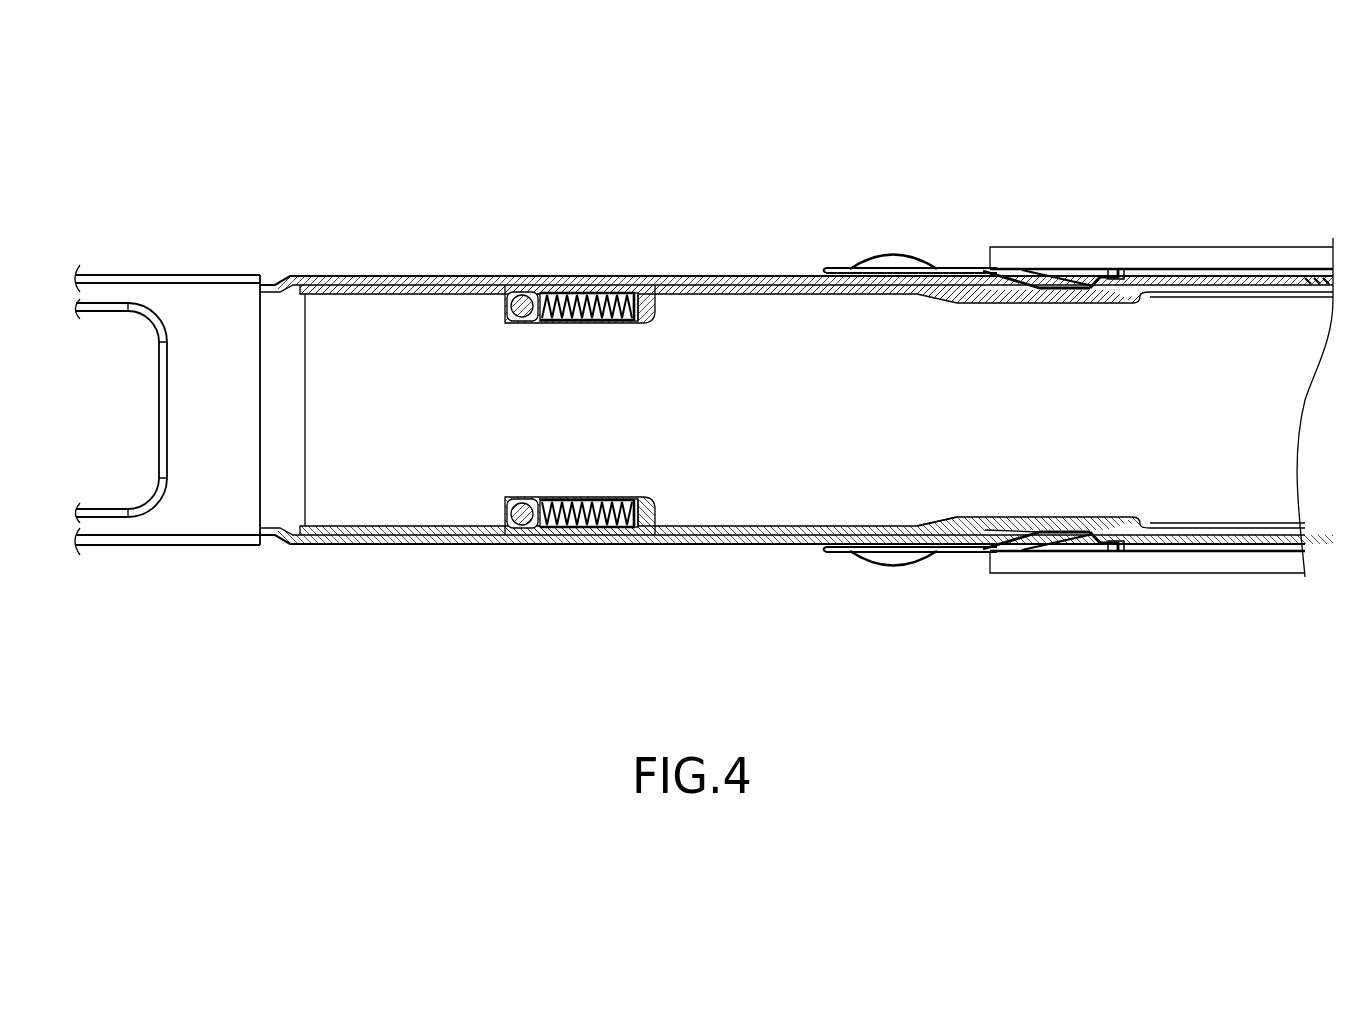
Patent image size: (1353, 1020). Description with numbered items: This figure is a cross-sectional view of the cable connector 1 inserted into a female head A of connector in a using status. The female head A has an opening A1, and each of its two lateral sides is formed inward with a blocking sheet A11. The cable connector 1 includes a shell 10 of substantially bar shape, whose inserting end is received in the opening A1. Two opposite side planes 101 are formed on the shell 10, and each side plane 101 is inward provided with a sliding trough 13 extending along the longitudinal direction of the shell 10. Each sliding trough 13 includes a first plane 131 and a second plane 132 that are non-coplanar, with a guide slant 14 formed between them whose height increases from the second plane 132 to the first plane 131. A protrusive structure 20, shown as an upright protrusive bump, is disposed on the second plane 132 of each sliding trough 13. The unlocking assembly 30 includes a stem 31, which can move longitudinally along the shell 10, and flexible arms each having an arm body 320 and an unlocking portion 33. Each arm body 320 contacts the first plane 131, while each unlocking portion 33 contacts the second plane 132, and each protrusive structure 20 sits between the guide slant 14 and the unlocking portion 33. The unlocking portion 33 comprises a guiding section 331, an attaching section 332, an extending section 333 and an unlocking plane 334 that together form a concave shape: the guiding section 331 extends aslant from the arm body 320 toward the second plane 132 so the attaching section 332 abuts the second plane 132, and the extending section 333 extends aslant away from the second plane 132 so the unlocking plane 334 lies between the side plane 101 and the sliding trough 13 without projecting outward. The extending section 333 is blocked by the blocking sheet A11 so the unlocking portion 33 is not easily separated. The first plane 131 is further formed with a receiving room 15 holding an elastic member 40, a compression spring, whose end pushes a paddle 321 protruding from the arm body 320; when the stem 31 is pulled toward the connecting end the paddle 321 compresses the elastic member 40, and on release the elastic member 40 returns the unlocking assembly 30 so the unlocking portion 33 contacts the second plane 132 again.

The cable connector 1 is at (345, 200).
The unlocking assembly 30 is at (135, 270).
The stem 31 is at (210, 290).
The shell 10 is at (476, 290).
The arm body 320 is at (427, 280).
The paddle 321 is at (638, 300).
The receiving room 15 is at (580, 292).
The elastic member 40 is at (605, 295).
The opening A1 is at (820, 270).
The sliding trough 13 is at (967, 555).
The first plane 131 is at (800, 540).
The guide slant 14 is at (946, 528).
The protrusive structure 20 is at (1000, 532).
The second plane 132 is at (1030, 530).
The blocking sheet A11 is at (1075, 545).
The side plane 101 is at (1210, 555).
The unlocking portion 33 is at (963, 174).
The guiding section 331 is at (1020, 283).
The attaching section 332 is at (1062, 290).
The extending section 333 is at (1093, 285).
The unlocking plane 334 is at (1112, 280).
The female head of connector A is at (1222, 270).